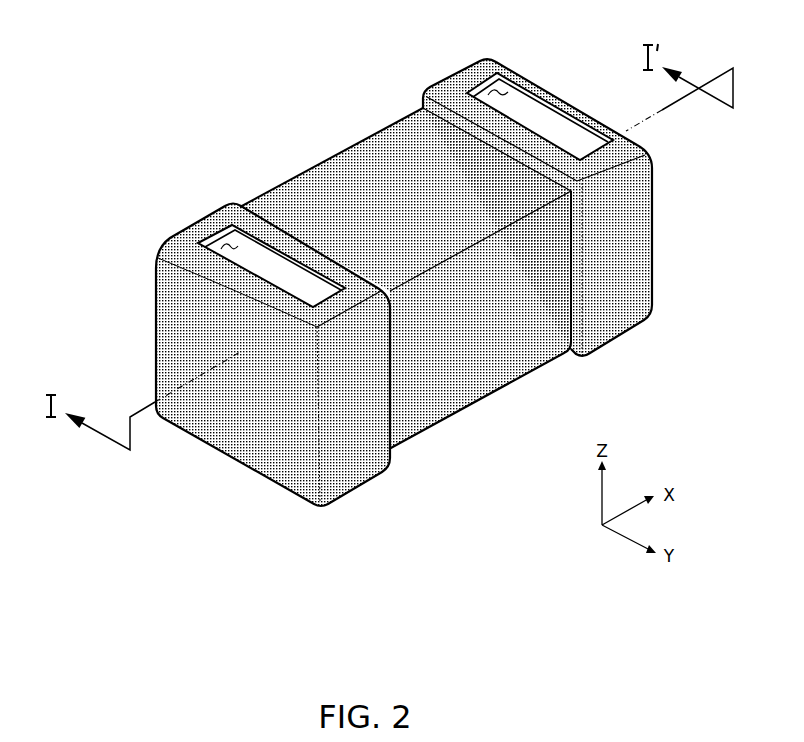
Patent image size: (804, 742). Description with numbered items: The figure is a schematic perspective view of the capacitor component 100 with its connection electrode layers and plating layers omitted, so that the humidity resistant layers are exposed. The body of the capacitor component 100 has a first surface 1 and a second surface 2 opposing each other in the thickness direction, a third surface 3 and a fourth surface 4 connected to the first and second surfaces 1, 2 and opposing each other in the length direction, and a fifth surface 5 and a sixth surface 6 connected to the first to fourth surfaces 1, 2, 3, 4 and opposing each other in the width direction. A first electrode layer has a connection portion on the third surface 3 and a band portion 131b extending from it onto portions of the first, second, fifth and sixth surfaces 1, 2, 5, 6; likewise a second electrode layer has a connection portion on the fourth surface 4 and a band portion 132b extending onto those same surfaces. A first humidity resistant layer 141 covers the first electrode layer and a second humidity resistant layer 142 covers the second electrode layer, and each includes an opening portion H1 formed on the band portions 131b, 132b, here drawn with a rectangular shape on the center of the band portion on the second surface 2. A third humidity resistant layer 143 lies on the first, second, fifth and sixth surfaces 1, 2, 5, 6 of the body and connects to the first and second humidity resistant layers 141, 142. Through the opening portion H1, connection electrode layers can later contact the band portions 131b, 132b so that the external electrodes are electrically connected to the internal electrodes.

The capacitor component 100 is at (203, 60).
The first surface 1 is at (445, 382).
The second surface 2 is at (416, 160).
The third surface 3 is at (243, 414).
The fourth surface 4 is at (624, 223).
The fifth surface 5 is at (506, 352).
The sixth surface 6 is at (358, 183).
The band portion 131b is at (260, 266).
The band portion 132b is at (542, 118).
The first humidity resistant layer 141 is at (229, 337).
The second humidity resistant layer 142 is at (574, 183).
The third humidity resistant layer 143 is at (302, 197).
The opening portion H1 is at (226, 241).